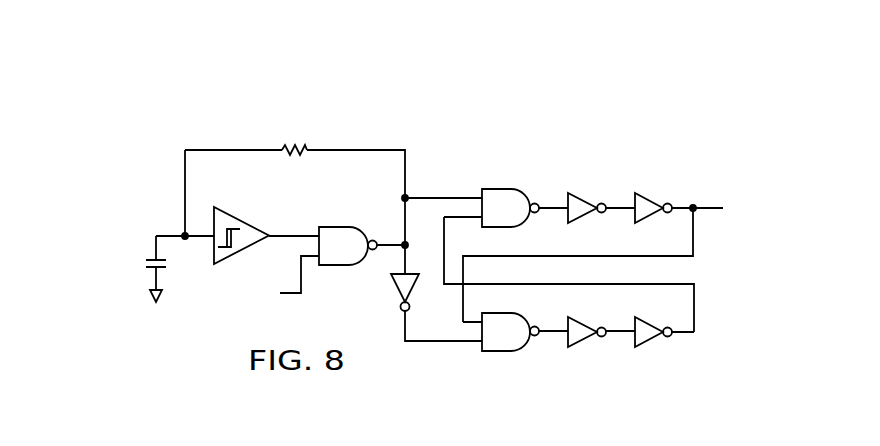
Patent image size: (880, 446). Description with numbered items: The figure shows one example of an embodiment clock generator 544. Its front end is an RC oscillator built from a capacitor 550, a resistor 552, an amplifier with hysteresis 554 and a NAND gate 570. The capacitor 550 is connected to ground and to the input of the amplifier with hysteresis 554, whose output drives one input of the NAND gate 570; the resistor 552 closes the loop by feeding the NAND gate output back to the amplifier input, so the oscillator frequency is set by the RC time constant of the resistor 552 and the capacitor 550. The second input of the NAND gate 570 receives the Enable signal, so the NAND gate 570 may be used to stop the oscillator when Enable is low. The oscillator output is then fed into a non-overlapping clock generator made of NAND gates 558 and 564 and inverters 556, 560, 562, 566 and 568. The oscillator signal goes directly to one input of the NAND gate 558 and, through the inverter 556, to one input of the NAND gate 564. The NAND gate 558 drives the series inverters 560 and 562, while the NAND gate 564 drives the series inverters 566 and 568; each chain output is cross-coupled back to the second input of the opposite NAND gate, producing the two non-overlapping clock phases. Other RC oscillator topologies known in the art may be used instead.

The clock generator 544 is at (588, 104).
The capacitor 550 is at (146, 264).
The resistor 552 is at (294, 143).
The amplifier with hysteresis 554 is at (263, 206).
The inverter 556 is at (392, 288).
The NAND gate 558 is at (505, 187).
The inverter 560 is at (585, 195).
The inverter 562 is at (652, 195).
The NAND gate 564 is at (506, 353).
The inverter 566 is at (590, 348).
The inverter 568 is at (657, 348).
The NAND gate 570 is at (341, 225).